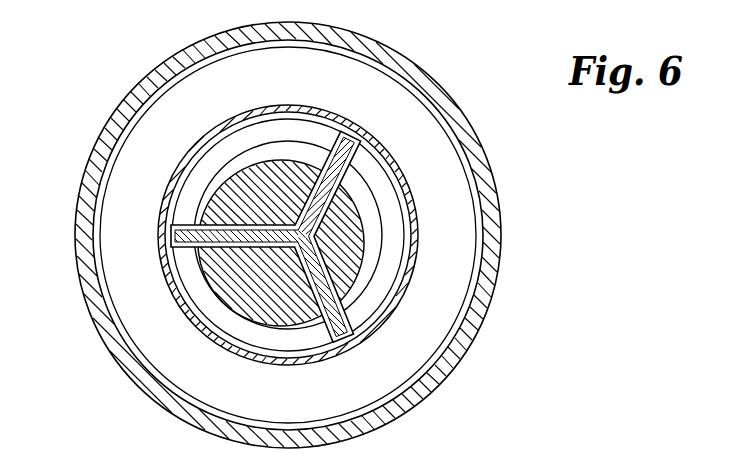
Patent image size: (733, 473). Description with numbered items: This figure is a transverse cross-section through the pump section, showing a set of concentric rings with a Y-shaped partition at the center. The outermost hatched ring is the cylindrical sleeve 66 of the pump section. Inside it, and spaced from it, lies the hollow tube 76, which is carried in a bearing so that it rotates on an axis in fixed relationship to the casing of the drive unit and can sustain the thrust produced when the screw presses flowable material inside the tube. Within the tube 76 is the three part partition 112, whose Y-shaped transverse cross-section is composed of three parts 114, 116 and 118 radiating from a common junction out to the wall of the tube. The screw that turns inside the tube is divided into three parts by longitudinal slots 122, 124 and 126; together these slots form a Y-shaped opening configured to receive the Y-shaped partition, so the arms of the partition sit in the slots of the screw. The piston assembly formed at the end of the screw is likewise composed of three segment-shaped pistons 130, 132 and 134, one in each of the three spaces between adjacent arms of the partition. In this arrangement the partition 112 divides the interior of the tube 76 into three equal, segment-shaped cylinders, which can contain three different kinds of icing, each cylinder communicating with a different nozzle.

The sleeve 66 is at (499, 256).
The hollow tube 76 is at (228, 128).
The three part partition 112 is at (287, 227).
The partition part 114 is at (347, 171).
The partition part 116 is at (353, 340).
The partition part 118 is at (167, 234).
The longitudinal slot 122 is at (320, 218).
The longitudinal slot 124 is at (315, 310).
The longitudinal slot 126 is at (203, 203).
The segment-shaped piston 130 is at (247, 337).
The segment-shaped piston 132 is at (383, 291).
The segment-shaped piston 134 is at (258, 132).